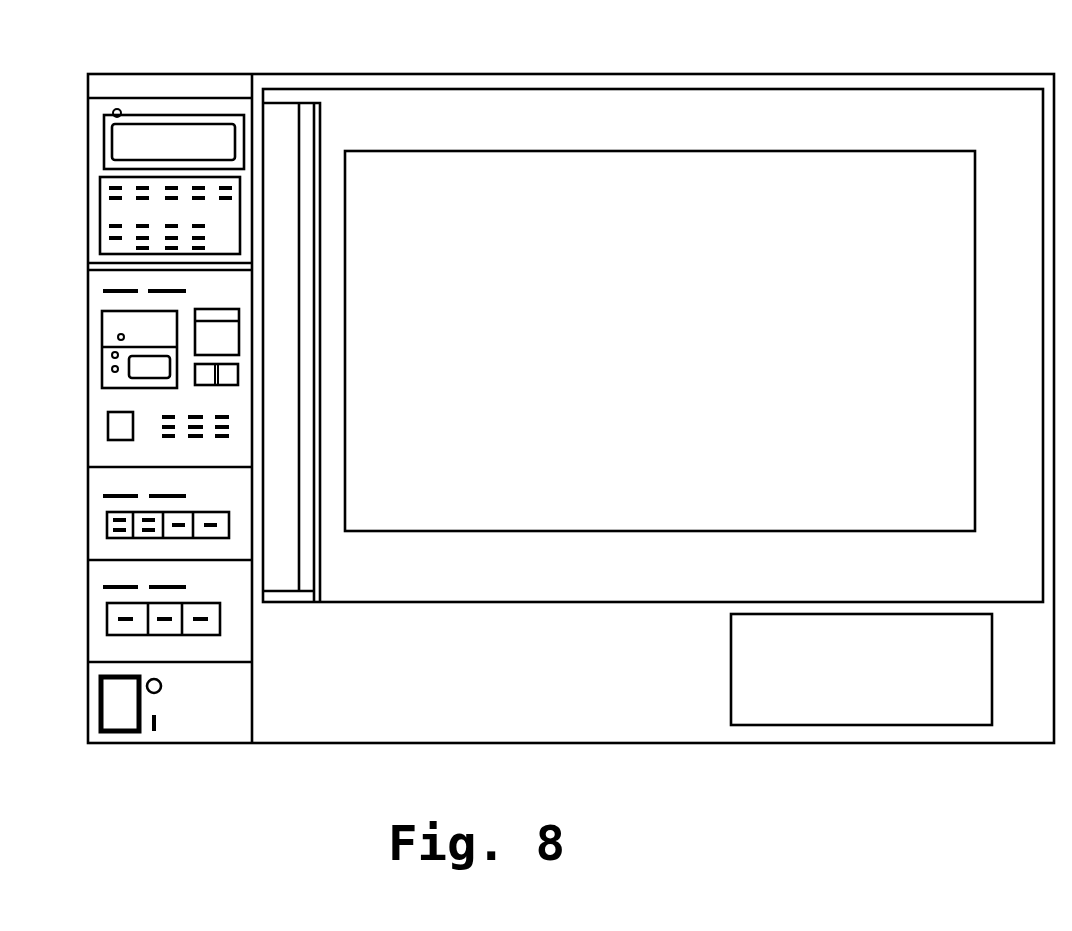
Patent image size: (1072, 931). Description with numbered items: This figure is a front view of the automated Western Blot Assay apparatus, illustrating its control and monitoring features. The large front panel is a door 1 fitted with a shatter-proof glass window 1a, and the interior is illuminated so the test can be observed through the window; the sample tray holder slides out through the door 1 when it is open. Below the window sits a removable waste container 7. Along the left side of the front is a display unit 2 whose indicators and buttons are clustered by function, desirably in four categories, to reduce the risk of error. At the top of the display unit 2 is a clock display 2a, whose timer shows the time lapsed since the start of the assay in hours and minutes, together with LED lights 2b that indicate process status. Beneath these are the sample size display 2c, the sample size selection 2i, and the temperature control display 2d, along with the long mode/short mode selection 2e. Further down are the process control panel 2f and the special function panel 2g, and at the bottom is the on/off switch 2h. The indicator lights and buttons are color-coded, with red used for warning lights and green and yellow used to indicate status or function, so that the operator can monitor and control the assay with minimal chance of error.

The door 1 is at (644, 97).
The glass window 1a is at (879, 163).
The display unit 2 is at (105, 82).
The clock display 2a is at (117, 138).
The LED lights 2b is at (100, 213).
The sample size display 2c is at (209, 332).
The temperature control display 2d is at (107, 337).
The long mode/short mode selection 2e is at (121, 420).
The process control panel 2f is at (107, 520).
The special function panel 2g is at (107, 617).
The on/off switch 2h is at (122, 706).
The sample size selection 2i is at (198, 375).
The removable waste container 7 is at (952, 725).